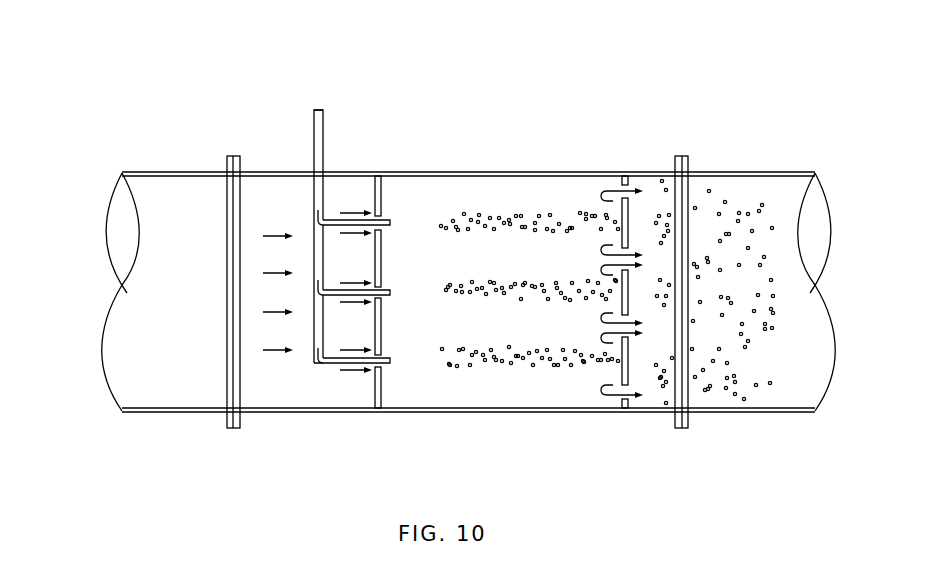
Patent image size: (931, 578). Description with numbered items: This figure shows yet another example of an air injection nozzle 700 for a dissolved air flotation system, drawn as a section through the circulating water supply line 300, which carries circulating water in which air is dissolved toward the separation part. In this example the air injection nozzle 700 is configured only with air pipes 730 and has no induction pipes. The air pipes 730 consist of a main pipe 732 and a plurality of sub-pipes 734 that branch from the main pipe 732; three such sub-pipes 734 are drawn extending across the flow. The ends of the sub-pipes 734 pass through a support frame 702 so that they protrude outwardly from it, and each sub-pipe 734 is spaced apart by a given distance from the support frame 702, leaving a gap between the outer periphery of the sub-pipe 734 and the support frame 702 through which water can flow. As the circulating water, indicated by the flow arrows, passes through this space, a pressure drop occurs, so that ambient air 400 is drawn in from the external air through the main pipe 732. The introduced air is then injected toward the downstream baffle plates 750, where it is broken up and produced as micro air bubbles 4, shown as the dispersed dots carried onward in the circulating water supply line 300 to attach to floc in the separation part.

The circulating water supply line 300 is at (140, 284).
The ambient air 400 is at (318, 94).
The air injection nozzle 700 is at (267, 173).
The support frame 702 is at (380, 395).
The air pipes 730 is at (507, 98).
The main pipe 732 is at (320, 148).
The sub-pipe 734 is at (390, 216).
The baffle plate 750 is at (627, 360).
The micro air bubbles 4 is at (731, 258).